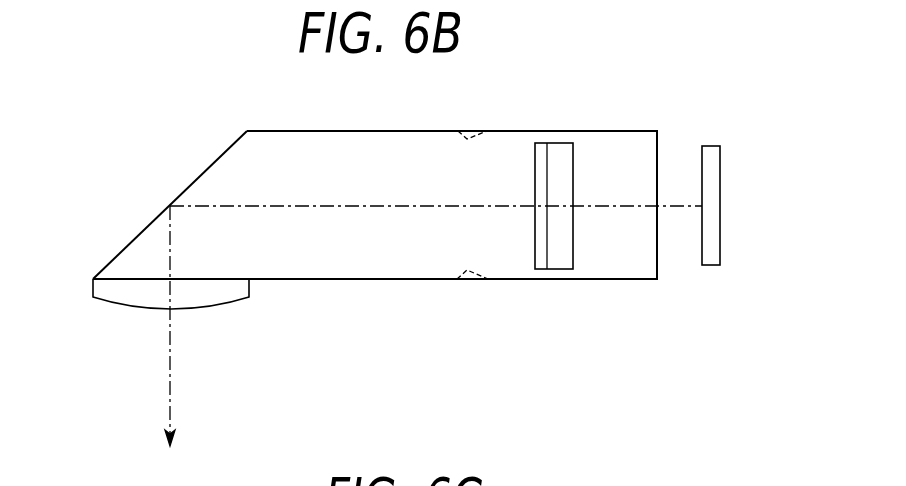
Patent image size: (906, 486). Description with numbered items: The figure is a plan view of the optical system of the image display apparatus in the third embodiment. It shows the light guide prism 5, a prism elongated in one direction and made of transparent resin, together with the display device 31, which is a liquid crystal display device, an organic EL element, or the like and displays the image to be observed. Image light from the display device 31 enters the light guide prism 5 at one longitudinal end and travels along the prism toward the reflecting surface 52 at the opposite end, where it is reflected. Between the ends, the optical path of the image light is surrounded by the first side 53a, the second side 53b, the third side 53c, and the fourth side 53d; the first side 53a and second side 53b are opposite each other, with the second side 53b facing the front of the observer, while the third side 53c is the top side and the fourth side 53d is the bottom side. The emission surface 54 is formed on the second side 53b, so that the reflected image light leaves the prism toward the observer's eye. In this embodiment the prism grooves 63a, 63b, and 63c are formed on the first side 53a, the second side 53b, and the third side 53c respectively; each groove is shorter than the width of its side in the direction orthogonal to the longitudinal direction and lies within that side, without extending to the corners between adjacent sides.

The light guide prism 5 is at (557, 299).
The display device 31 is at (720, 177).
The reflecting surface 52 is at (196, 180).
The first side 53a is at (363, 131).
The second side 53b is at (366, 282).
The third side 53c is at (293, 180).
The fourth side 53d is at (297, 240).
The emission surface 54 is at (121, 303).
The prism groove 63a is at (467, 139).
The prism groove 63b is at (467, 271).
The prism groove 63c is at (553, 165).